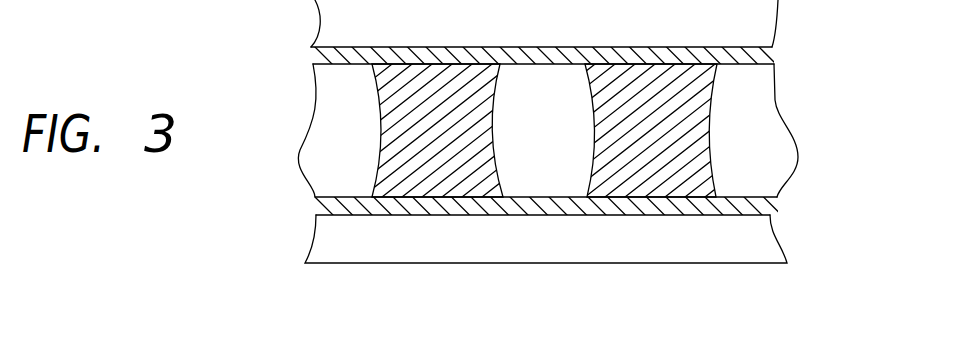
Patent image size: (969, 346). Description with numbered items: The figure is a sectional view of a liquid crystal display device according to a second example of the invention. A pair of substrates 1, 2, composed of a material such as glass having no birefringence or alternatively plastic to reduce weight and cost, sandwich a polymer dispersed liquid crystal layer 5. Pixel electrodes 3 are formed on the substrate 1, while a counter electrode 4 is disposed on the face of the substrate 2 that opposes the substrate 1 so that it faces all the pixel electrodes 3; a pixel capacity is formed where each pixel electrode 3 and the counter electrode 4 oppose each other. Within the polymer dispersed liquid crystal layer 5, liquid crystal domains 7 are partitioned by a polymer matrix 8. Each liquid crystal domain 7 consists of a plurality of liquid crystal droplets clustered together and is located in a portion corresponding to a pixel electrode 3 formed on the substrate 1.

The substrate 1 is at (767, 247).
The substrate 2 is at (762, 18).
The pixel electrode 3 is at (717, 193).
The counter electrode 4 is at (767, 60).
The polymer dispersed liquid crystal layer 5 is at (351, 145).
The liquid crystal domain 7 is at (446, 190).
The polymer matrix 8 is at (553, 178).